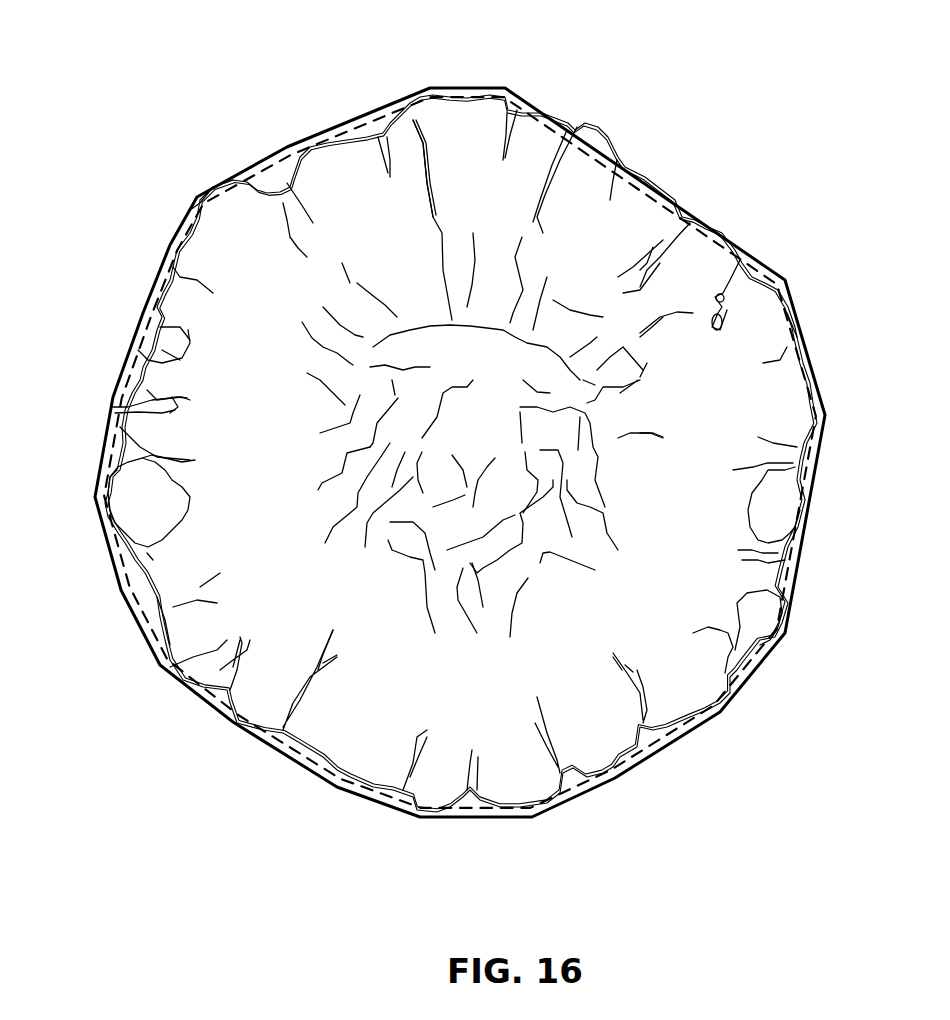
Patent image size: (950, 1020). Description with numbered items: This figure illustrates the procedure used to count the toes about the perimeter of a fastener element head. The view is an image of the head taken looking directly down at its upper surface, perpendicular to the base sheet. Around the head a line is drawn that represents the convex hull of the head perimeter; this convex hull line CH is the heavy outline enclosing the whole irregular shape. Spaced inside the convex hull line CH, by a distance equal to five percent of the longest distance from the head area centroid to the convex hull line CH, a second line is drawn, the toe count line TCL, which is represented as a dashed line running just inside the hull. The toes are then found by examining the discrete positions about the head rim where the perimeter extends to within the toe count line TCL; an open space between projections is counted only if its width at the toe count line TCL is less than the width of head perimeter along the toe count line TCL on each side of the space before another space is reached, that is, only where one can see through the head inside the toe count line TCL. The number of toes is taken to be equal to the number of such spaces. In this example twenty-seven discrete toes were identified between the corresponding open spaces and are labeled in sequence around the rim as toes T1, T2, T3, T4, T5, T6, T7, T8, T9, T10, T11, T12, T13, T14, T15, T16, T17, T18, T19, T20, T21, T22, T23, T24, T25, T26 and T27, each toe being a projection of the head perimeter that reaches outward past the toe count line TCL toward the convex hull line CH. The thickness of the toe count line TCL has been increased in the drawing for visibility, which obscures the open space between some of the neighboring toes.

The toe T1 is at (95, 497).
The toe T2 is at (115, 408).
The toe T3 is at (137, 372).
The toe T4 is at (148, 343).
The toe T5 is at (150, 297).
The toe T6 is at (190, 210).
The toe T7 is at (308, 143).
The toe T8 is at (363, 127).
The toe T9 is at (403, 117).
The toe T10 is at (472, 88).
The toe T11 is at (547, 110).
The toe T12 is at (600, 117).
The toe T13 is at (660, 183).
The toe T14 is at (733, 228).
The toe T15 is at (797, 303).
The toe T16 is at (828, 403).
The toe T17 is at (812, 513).
The toe T18 is at (788, 623).
The toe T19 is at (720, 710).
The toe T20 is at (615, 778).
The toe T21 is at (533, 818).
The toe T22 is at (420, 813).
The toe T23 is at (357, 793).
The toe T24 is at (300, 753).
The toe T25 is at (230, 730).
The toe T26 is at (157, 672).
The toe T27 is at (143, 590).
The convex hull line CH is at (815, 468).
The toe count line TCL is at (662, 728).